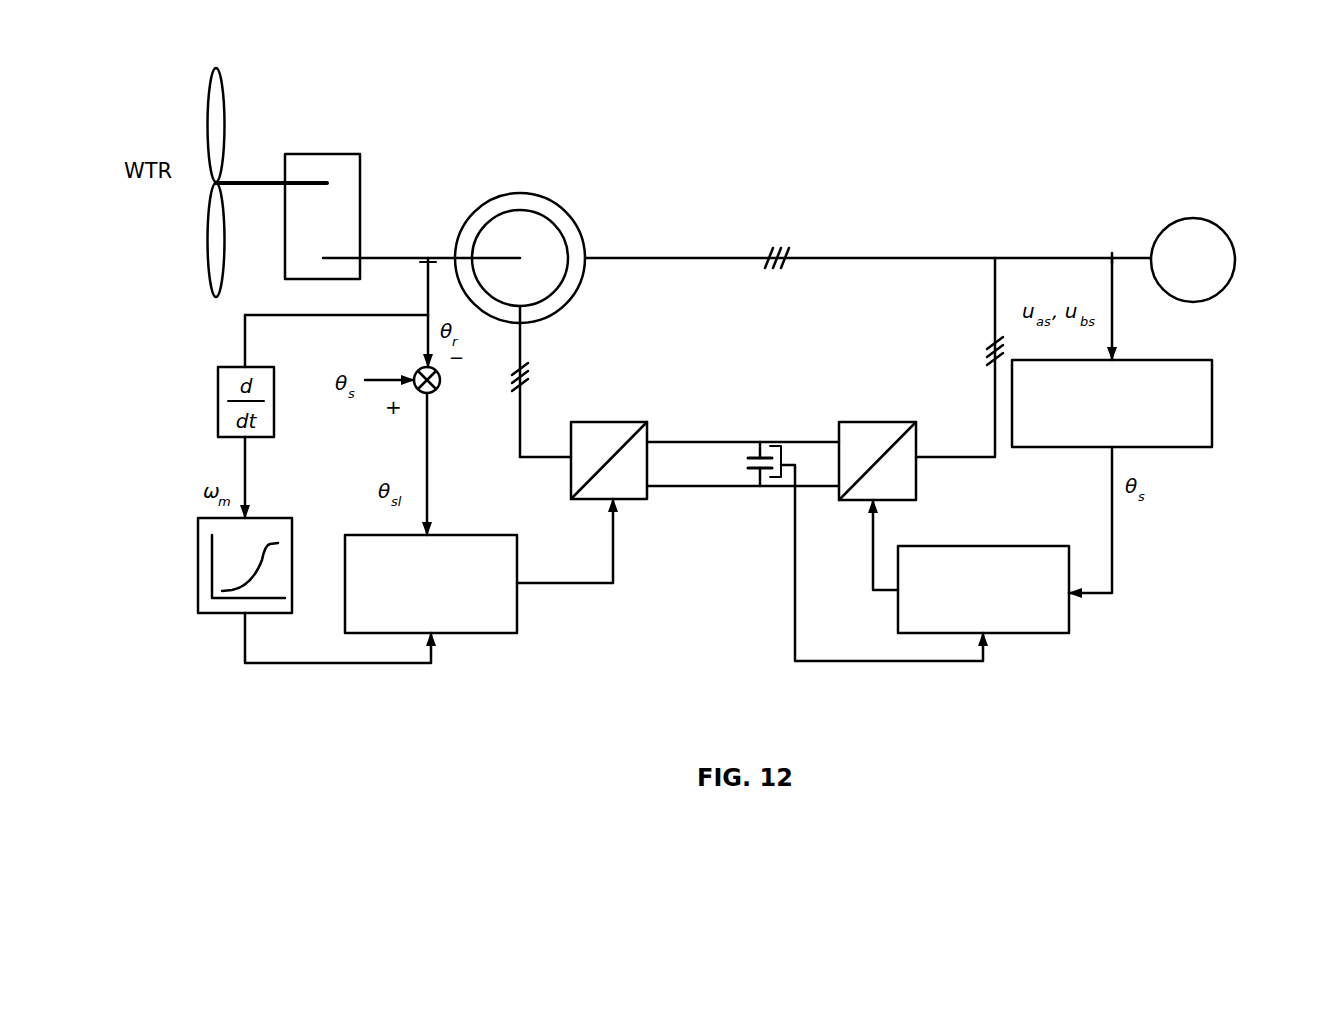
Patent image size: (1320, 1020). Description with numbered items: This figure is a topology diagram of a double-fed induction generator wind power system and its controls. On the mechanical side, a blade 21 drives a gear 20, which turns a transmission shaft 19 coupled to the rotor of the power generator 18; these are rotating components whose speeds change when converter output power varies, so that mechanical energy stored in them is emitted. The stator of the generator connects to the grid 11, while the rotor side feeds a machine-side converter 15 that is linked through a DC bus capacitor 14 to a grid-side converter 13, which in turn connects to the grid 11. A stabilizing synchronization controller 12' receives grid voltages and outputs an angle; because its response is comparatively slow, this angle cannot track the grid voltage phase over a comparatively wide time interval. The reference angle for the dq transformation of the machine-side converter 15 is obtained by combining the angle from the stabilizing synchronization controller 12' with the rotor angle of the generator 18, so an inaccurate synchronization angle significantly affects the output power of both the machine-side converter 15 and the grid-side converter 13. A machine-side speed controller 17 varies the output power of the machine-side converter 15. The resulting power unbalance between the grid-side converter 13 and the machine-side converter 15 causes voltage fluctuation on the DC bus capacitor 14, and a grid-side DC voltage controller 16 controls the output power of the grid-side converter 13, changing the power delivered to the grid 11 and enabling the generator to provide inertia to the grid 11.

The blade 21 is at (223, 107).
The gear 20 is at (343, 152).
The transmission shaft 19 is at (383, 253).
The rotor of a power generator 18 is at (565, 207).
The machine-side speed controller 17 is at (463, 535).
The machine-side converter 15 is at (623, 420).
The DC bus capacitor 14 is at (760, 455).
The grid-side converter 13 is at (876, 420).
The grid-side DC voltage controller 16 is at (983, 545).
The stabilizing synchronization controller 12' is at (1156, 401).
The grid 11 is at (1215, 220).